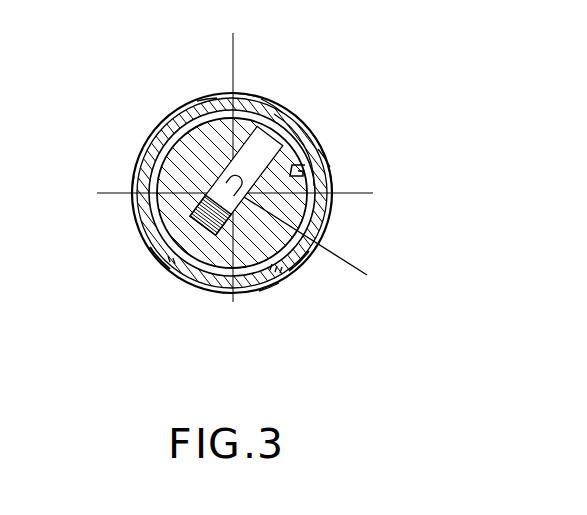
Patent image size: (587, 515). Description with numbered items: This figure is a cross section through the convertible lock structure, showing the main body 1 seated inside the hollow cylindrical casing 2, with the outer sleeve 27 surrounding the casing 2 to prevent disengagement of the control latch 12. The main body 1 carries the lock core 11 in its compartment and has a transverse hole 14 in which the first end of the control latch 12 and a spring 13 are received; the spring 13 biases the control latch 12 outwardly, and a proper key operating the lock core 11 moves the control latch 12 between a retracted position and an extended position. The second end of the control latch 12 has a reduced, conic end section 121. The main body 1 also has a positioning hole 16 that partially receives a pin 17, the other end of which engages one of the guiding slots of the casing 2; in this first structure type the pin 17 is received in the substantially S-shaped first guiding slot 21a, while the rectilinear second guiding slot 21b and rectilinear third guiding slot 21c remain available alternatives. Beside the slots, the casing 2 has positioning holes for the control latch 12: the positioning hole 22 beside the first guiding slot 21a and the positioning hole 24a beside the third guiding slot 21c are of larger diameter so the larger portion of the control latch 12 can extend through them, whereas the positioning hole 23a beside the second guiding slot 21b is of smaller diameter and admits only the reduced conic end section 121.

The main body 1 is at (170, 128).
The casing 2 is at (228, 33).
The lock core 11 is at (203, 108).
The control latch 12 is at (308, 131).
The spring 13 is at (217, 240).
The transverse hole 14 is at (338, 142).
The positioning hole 16 is at (336, 188).
The pin 17 is at (330, 167).
The first guiding slot 21a is at (384, 145).
The second guiding slot 21b is at (133, 176).
The third guiding slot 21c is at (279, 283).
The positioning hole 22 is at (217, 98).
The positioning hole 23a is at (150, 247).
The positioning hole 24a is at (308, 250).
The outer sleeve 27 is at (262, 100).
The reduced conic end section 121 is at (284, 113).